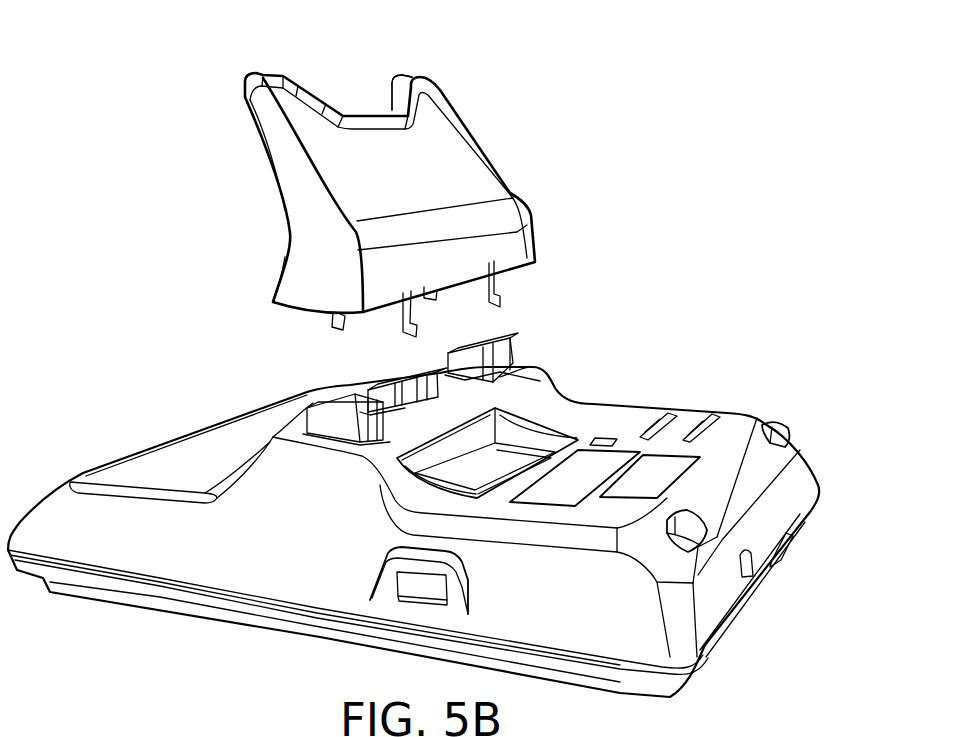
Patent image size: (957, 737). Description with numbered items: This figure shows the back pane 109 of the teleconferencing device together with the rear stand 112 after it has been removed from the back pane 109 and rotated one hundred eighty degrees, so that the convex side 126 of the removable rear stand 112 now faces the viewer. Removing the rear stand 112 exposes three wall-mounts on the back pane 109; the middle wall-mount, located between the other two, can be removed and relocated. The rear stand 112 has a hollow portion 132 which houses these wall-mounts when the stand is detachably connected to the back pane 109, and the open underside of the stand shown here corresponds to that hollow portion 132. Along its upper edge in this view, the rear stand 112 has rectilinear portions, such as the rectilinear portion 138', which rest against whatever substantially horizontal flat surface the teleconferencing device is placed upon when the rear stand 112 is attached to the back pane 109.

The back pane 109 is at (118, 412).
The convex side 126 is at (513, 132).
The rear stand 112 is at (258, 125).
The hollow portion 132 is at (258, 279).
The rectilinear portion 138' is at (213, 62).